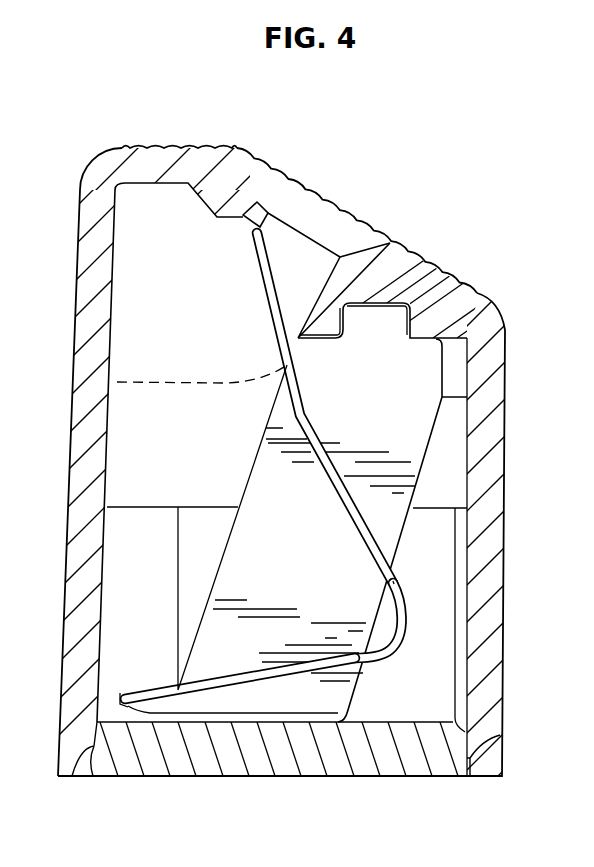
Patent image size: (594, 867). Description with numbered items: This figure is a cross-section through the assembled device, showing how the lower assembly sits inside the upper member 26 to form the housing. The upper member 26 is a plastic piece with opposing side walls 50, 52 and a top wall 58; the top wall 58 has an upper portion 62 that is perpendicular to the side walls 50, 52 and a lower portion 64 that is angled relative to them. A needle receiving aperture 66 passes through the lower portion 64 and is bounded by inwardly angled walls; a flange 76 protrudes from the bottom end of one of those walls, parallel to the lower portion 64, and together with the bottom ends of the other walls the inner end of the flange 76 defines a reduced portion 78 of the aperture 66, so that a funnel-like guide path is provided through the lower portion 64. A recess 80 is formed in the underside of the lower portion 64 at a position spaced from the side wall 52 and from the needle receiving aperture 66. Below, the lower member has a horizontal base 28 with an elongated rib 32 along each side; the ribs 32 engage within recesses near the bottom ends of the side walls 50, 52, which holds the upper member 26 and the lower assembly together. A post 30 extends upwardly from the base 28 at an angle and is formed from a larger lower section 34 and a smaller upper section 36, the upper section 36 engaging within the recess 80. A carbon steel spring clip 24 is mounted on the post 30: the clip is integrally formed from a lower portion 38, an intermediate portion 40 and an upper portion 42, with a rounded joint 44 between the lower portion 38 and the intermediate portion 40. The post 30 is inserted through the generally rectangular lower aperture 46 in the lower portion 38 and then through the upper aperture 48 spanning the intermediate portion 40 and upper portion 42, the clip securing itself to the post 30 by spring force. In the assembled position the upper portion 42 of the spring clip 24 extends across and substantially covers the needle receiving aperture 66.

The spring clip 24 is at (390, 650).
The upper member 26 is at (113, 145).
The horizontal base 28 is at (375, 767).
The post 30 is at (423, 427).
The elongated rib 32 is at (84, 753).
The lower section 34 is at (417, 453).
The upper section 36 is at (414, 300).
The lower portion 38 is at (124, 722).
The intermediate portion 40 is at (380, 543).
The upper portion 42 is at (262, 283).
The joint 44 is at (403, 617).
The lower aperture 46 is at (192, 683).
The upper aperture 48 is at (117, 382).
The side wall 50 is at (82, 345).
The side wall 52 is at (498, 653).
The top wall 58 is at (198, 152).
The upper portion 62 is at (164, 156).
The lower portion 64 is at (388, 320).
The needle receiving aperture 66 is at (378, 251).
The flange 76 is at (265, 212).
The reduced portion 78 is at (283, 219).
The recess 80 is at (413, 336).